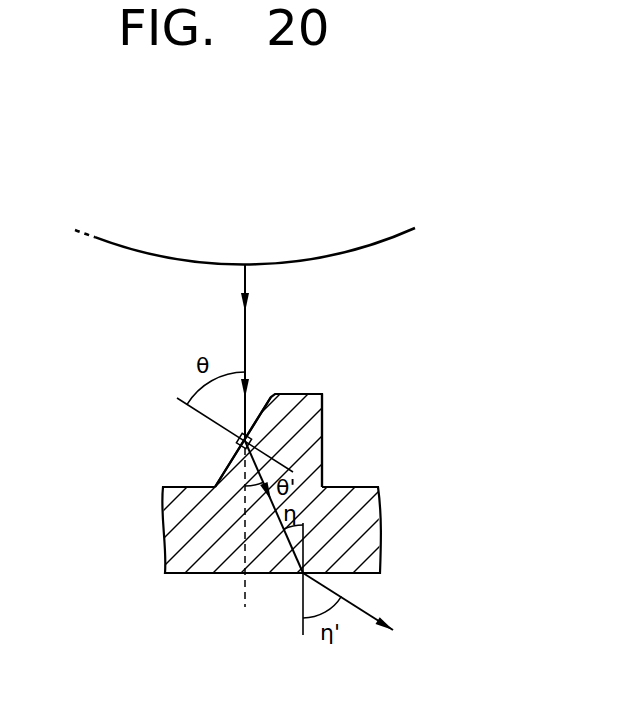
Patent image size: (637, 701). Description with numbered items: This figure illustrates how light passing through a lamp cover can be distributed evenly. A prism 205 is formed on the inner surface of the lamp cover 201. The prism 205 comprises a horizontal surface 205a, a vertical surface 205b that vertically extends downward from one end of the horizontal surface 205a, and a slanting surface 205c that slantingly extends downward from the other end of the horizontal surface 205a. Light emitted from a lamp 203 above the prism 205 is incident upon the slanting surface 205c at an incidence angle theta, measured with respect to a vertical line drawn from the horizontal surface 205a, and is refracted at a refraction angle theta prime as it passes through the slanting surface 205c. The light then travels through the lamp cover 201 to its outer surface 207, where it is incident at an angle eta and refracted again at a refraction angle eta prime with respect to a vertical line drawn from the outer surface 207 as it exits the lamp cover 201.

The lamp cover 201 is at (378, 527).
The lamp 203 is at (363, 250).
The prism 205 is at (337, 399).
The horizontal surface 205a is at (301, 394).
The vertical surface 205b is at (322, 447).
The slanting surface 205c is at (262, 412).
The outer surface 207 is at (197, 575).